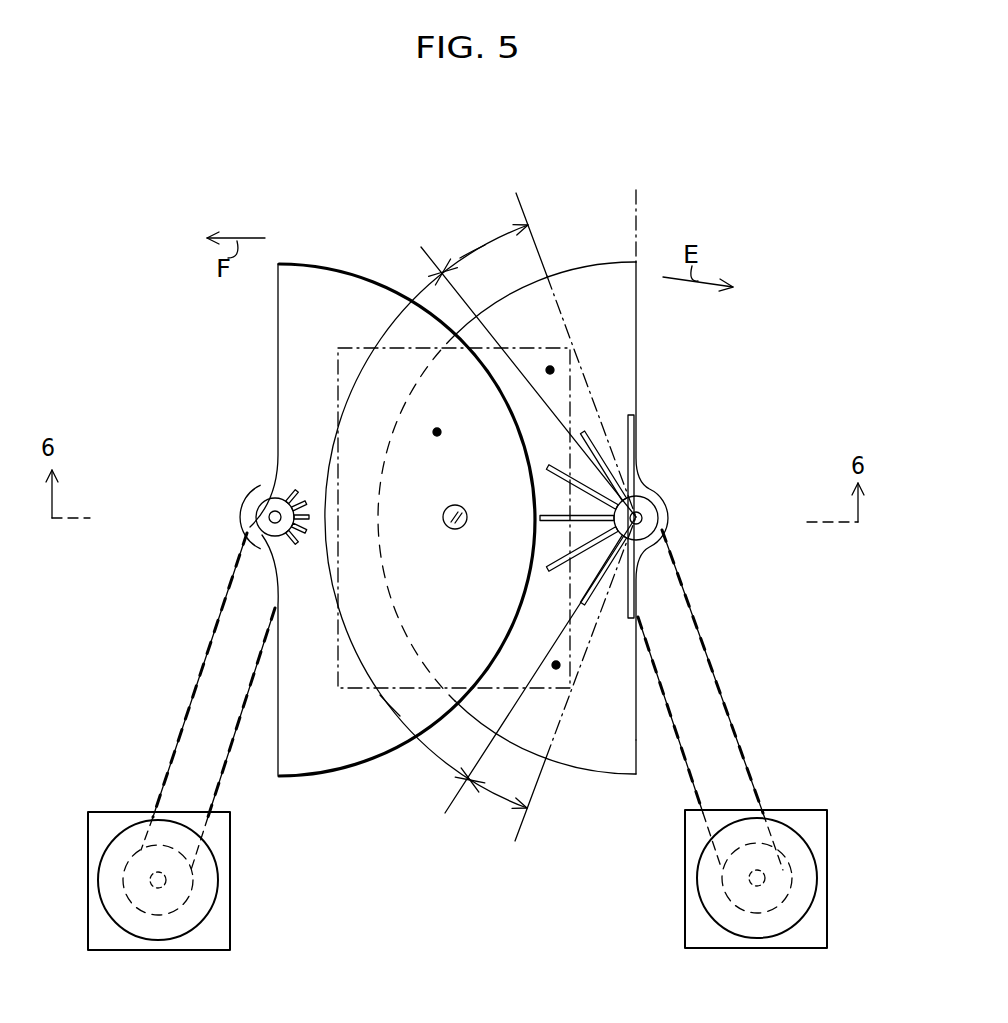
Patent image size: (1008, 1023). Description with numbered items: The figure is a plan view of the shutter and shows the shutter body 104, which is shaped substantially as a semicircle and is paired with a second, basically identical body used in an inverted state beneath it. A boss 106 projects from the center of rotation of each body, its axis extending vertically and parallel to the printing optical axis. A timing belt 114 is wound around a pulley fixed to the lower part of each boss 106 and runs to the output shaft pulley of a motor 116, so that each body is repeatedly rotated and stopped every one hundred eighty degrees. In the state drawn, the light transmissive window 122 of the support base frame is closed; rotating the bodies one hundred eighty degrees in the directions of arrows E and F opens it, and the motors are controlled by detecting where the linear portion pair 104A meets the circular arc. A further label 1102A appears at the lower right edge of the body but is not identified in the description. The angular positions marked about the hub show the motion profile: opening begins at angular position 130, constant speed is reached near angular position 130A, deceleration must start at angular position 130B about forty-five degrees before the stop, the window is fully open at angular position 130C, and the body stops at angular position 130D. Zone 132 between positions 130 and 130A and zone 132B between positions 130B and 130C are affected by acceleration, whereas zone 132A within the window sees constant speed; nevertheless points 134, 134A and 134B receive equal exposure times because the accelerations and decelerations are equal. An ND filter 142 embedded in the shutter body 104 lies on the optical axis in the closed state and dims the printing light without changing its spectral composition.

The shutter body 104 is at (292, 306).
The linear portion pair 104A is at (278, 355).
The boss 106 is at (268, 505).
The timing belt 114 is at (167, 760).
The motor 116 is at (222, 924).
The light transmissive window 122 is at (403, 688).
The rotational angular position 130 is at (517, 838).
The rotational angular position 130A is at (452, 800).
The rotational angular position 130B is at (427, 247).
The rotational angular position 130C is at (525, 214).
The rotational angular position 130D is at (637, 224).
The zone 132 is at (512, 812).
The zone 132A is at (390, 706).
The zone 132B is at (472, 252).
The point 134 is at (558, 667).
The point 134A is at (552, 364).
The point 134B is at (438, 436).
The ND filter 142 is at (455, 530).
The plate edge 1102A is at (640, 748).